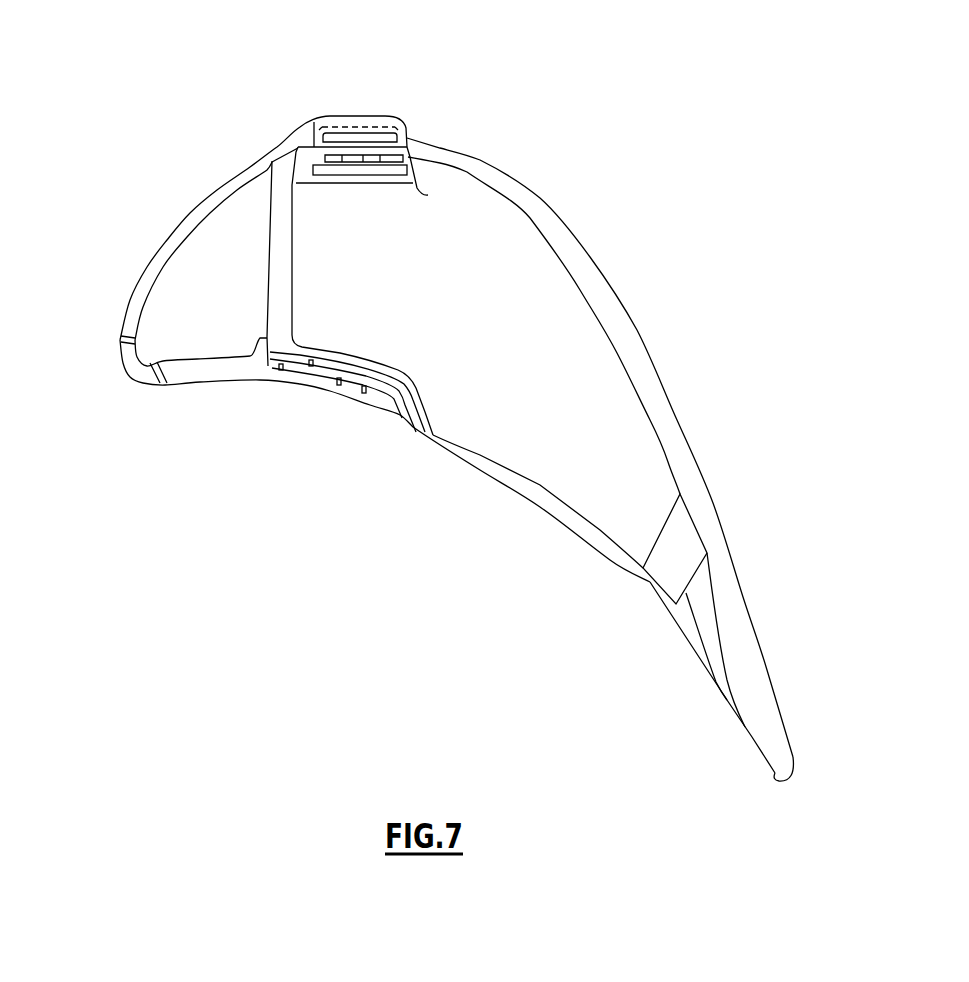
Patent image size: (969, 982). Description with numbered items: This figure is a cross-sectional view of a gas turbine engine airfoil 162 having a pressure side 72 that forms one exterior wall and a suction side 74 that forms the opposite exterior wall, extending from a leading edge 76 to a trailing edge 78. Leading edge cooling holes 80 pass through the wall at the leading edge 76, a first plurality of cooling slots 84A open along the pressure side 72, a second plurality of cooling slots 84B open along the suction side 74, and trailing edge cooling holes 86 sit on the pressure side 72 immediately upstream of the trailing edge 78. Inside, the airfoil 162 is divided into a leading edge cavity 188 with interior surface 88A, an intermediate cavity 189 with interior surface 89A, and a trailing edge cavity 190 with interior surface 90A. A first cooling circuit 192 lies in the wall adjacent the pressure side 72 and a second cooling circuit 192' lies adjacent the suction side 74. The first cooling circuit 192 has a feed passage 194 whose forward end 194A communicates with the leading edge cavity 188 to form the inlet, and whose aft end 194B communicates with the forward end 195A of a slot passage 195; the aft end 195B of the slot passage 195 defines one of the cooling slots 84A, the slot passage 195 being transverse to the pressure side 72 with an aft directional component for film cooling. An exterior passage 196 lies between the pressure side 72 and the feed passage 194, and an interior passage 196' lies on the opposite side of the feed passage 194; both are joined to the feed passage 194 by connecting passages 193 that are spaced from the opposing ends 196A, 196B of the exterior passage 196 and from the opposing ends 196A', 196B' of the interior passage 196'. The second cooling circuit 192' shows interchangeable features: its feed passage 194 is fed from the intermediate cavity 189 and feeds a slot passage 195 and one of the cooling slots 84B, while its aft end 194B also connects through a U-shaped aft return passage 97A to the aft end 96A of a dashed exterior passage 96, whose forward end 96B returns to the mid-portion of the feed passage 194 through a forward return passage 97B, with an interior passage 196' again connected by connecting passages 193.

The pressure side 72 is at (640, 594).
The suction side 74 is at (637, 330).
The leading edge 76 is at (125, 375).
The trailing edge 78 is at (788, 778).
The leading edge cooling holes 80 is at (124, 340).
The first plurality of cooling slots 84A is at (407, 425).
The second plurality of cooling slots 84B is at (418, 145).
The trailing edge cooling holes 86 is at (730, 705).
The interior surface of leading edge cavity 88A is at (147, 310).
The interior surface of intermediate cavity 89A is at (643, 417).
The interior surface of trailing edge cavity 90A is at (700, 535).
The exterior passage 96 is at (330, 110).
The aft end of exterior passage 96A is at (408, 118).
The forward end of exterior passage 96B is at (300, 122).
The aft return passage 97A is at (380, 116).
The forward return passage 97B is at (303, 128).
The airfoil 162 is at (577, 190).
The leading edge cavity 188 is at (184, 252).
The intermediate cavity 189 is at (560, 297).
The trailing edge cavity 190 is at (676, 525).
The first cooling circuit 192 is at (332, 405).
The second cooling circuit 192' is at (366, 203).
The connecting passages 193 is at (325, 158).
The feed passage 194 is at (350, 127).
The forward end of feed passage 194A is at (288, 221).
The aft end of feed passage 194B is at (433, 146).
The slot passage 195 is at (392, 153).
The forward end of slot passage 195A is at (427, 192).
The aft end of slot passage 195B is at (403, 148).
The exterior passage 196 is at (343, 442).
The end of exterior passage 196A is at (425, 493).
The end of exterior passage 196B is at (216, 414).
The interior passage 196' is at (362, 257).
The end of interior passage 196A' is at (440, 283).
The end of interior passage 196B' is at (254, 242).